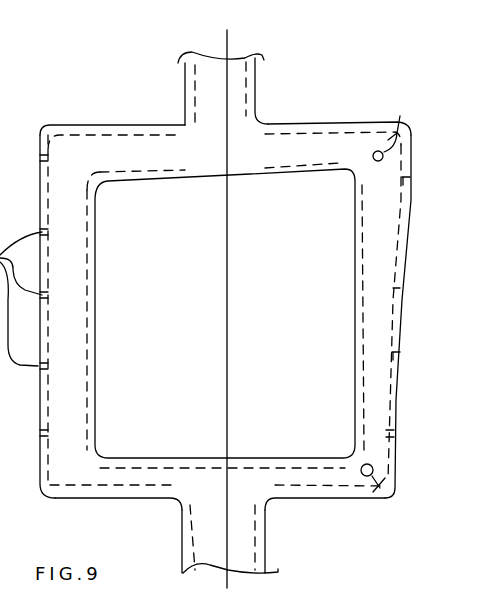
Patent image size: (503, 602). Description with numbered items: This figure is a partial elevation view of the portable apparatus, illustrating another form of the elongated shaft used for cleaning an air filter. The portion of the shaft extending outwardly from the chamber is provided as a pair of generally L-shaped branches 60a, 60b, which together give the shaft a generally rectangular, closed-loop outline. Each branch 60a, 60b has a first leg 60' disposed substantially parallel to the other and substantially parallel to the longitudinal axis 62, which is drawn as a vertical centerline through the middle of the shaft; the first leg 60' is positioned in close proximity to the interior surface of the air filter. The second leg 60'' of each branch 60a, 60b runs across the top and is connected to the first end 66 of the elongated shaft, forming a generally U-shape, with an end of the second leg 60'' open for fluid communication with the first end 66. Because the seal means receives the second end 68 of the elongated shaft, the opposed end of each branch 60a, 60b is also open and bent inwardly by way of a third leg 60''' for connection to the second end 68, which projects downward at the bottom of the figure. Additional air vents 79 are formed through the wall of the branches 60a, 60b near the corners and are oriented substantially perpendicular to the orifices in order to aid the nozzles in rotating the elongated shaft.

The first leg 60' is at (221, 313).
The second leg 60'' is at (225, 119).
The third leg 60''' is at (217, 507).
The L-shaped branch 60a is at (78, 380).
The L-shaped branch 60b is at (370, 342).
The longitudinal axis 62 is at (223, 317).
The first end 66 is at (258, 80).
The second end 68 is at (272, 550).
The air vent 79 is at (417, 502).